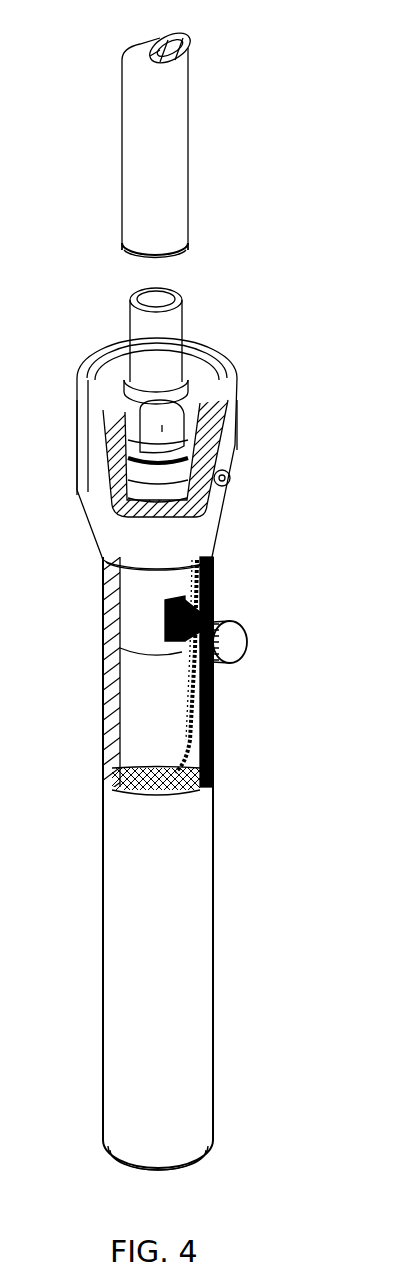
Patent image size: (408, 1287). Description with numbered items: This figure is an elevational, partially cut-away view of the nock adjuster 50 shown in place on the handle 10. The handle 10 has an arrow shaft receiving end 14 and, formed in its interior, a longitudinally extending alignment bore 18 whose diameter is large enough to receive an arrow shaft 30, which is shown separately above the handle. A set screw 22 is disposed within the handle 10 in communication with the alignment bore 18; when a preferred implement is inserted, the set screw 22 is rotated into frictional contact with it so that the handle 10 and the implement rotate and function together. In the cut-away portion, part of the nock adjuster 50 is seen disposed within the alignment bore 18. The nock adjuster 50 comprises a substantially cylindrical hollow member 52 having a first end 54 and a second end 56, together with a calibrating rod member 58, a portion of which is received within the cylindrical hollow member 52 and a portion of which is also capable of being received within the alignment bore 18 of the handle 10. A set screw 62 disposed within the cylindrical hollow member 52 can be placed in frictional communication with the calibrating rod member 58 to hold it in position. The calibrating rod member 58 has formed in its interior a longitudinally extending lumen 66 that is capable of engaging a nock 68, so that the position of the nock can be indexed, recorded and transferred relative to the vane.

The handle 10 is at (213, 831).
The arrow shaft receiving end 14 is at (182, 1166).
The alignment bore 18 is at (140, 668).
The set screw 22 is at (214, 616).
The arrow shaft 30 is at (168, 147).
The nock adjuster 50 is at (62, 538).
The cylindrical hollow member 52 is at (245, 395).
The first end 54 is at (232, 368).
The second end 56 is at (220, 520).
The calibrating rod member 58 is at (170, 475).
The set screw 62 is at (228, 486).
The lumen 66 is at (178, 440).
The nock 68 is at (172, 318).